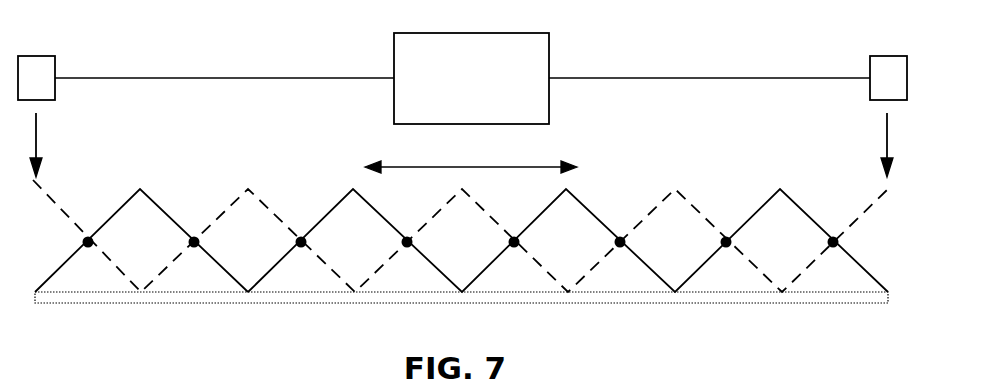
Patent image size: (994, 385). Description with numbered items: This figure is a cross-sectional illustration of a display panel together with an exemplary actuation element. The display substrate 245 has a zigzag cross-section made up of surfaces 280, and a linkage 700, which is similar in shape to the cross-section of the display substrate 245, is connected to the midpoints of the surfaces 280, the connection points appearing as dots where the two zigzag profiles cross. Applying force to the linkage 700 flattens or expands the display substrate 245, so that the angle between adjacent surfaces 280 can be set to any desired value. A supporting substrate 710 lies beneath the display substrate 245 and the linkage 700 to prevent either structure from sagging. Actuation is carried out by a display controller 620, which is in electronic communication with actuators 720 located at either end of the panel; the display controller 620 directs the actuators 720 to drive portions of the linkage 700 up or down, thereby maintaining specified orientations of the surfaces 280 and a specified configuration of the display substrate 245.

The display controller 620 is at (549, 33).
The actuator 720 is at (45, 56).
The display substrate 245 is at (133, 196).
The surface 280 is at (343, 198).
The linkage 700 is at (243, 197).
The substrate 710 is at (311, 307).